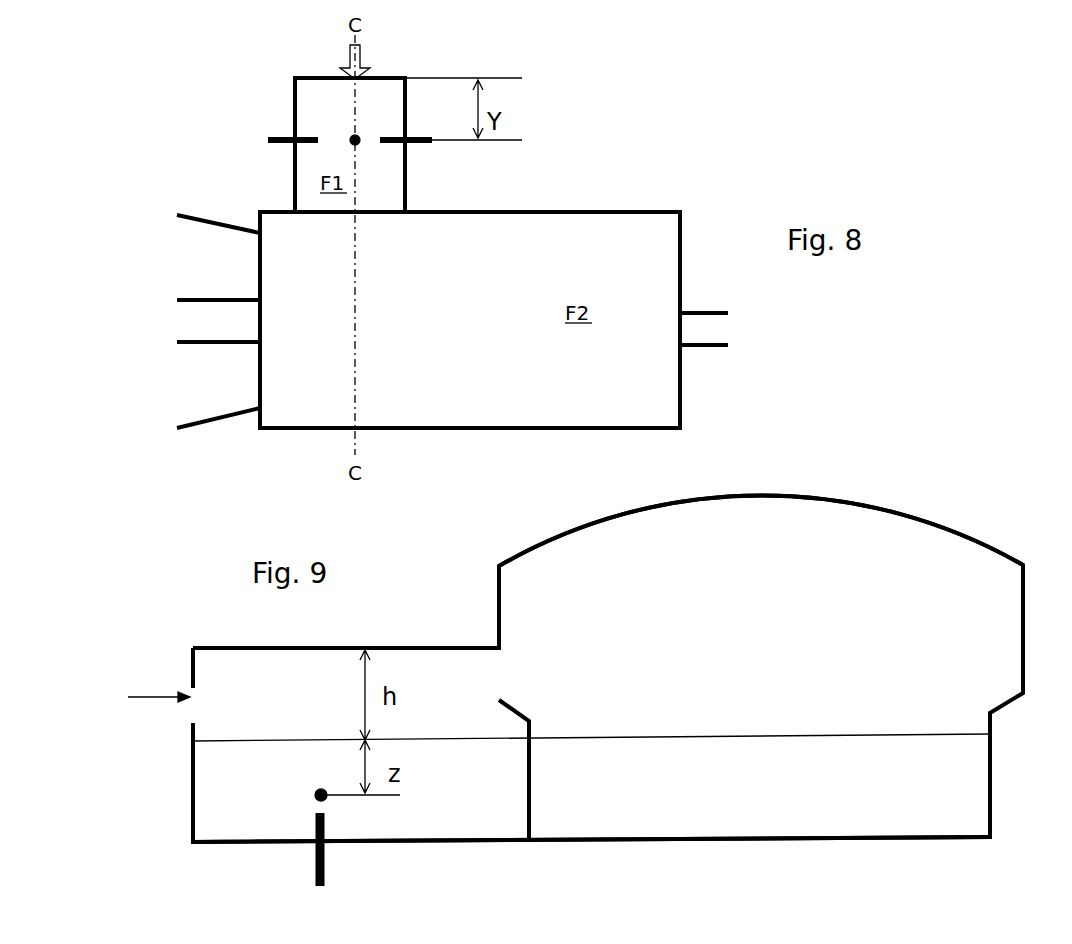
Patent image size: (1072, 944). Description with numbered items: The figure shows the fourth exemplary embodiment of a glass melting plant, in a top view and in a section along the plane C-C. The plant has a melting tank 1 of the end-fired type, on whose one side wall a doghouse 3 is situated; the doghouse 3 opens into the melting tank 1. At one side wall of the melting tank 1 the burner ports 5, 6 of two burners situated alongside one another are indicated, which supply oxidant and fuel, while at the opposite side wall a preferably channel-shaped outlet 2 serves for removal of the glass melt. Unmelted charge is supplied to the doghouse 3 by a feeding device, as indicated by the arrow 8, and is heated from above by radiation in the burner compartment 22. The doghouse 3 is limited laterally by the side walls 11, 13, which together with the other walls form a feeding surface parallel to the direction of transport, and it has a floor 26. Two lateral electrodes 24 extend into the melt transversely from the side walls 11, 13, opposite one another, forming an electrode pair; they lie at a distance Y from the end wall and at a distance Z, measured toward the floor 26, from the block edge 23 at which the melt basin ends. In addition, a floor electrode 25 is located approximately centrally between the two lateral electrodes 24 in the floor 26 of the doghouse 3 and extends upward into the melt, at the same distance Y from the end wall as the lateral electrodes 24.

In FIG. 8, the melting tank 1 is at (622, 210).
In FIG. 9, the melting tank 1 is at (953, 524).
In FIG. 8, the outlet 2 is at (690, 313).
In FIG. 8, the doghouse 3 is at (290, 90).
In FIG. 9, the doghouse 3 is at (258, 646).
In FIG. 8, the burner port 5 is at (260, 272).
In FIG. 8, the burner port 6 is at (260, 380).
In FIG. 8, the arrow 8 is at (362, 63).
In FIG. 9, the arrow 8 is at (147, 697).
In FIG. 8, the side wall 11 is at (294, 184).
In FIG. 8, the side wall 13 is at (406, 200).
In FIG. 9, the burner compartment 22 is at (770, 530).
In FIG. 9, the block edge 23 is at (248, 741).
In FIG. 8, the electrodes 24 is at (268, 138).
In FIG. 9, the electrodes 24 is at (325, 826).
In FIG. 8, the floor electrode 25 is at (358, 137).
In FIG. 9, the floor electrode 25 is at (322, 790).
In FIG. 9, the floor 26 is at (447, 829).